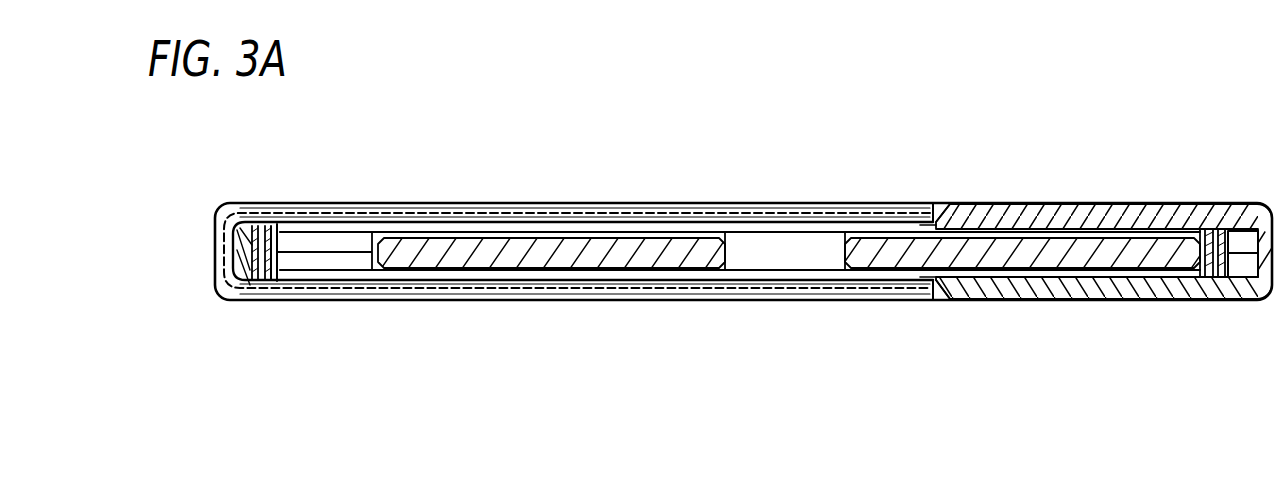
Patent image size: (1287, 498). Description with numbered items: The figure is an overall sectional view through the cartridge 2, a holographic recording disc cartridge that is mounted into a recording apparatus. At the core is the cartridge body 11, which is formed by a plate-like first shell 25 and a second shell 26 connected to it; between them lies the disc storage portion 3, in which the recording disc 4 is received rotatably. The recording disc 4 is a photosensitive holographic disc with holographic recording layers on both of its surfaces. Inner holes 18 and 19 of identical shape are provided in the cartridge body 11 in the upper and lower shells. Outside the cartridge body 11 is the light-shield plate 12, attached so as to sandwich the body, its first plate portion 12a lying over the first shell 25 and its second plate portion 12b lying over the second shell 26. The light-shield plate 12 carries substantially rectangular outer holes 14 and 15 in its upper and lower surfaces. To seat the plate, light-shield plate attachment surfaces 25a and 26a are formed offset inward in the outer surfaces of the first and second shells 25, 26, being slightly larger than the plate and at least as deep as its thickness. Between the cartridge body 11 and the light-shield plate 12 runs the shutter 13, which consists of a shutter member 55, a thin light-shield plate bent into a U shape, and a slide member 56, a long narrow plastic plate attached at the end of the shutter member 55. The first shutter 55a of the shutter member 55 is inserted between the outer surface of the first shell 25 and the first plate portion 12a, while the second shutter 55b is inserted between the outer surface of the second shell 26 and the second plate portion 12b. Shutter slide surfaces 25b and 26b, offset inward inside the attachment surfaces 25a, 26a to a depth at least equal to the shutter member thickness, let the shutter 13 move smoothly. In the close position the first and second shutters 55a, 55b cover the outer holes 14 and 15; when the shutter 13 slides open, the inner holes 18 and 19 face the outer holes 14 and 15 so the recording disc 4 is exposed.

The cartridge 2 is at (691, 192).
The disc storage portion 3 is at (852, 236).
The recording disc 4 is at (1128, 245).
The cartridge body 11 is at (1080, 311).
The light-shield plate 12 is at (479, 195).
The first plate portion 12a is at (255, 205).
The second plate portion 12b is at (250, 299).
The shutter 13 is at (552, 195).
The outer hole 14 is at (290, 205).
The outer hole 15 is at (290, 298).
The inner hole 18 is at (308, 205).
The inner hole 19 is at (305, 298).
The first shell 25 is at (1184, 195).
The light-shield plate attachment surface 25a is at (967, 205).
The shutter slide surface 25b is at (927, 223).
The second shell 26 is at (1151, 311).
The light-shield plate attachment surface 26a is at (962, 300).
The shutter slide surface 26b is at (922, 300).
The shutter member 55 is at (555, 310).
The first shutter 55a is at (796, 210).
The second shutter 55b is at (796, 299).
The slide member 56 is at (222, 266).